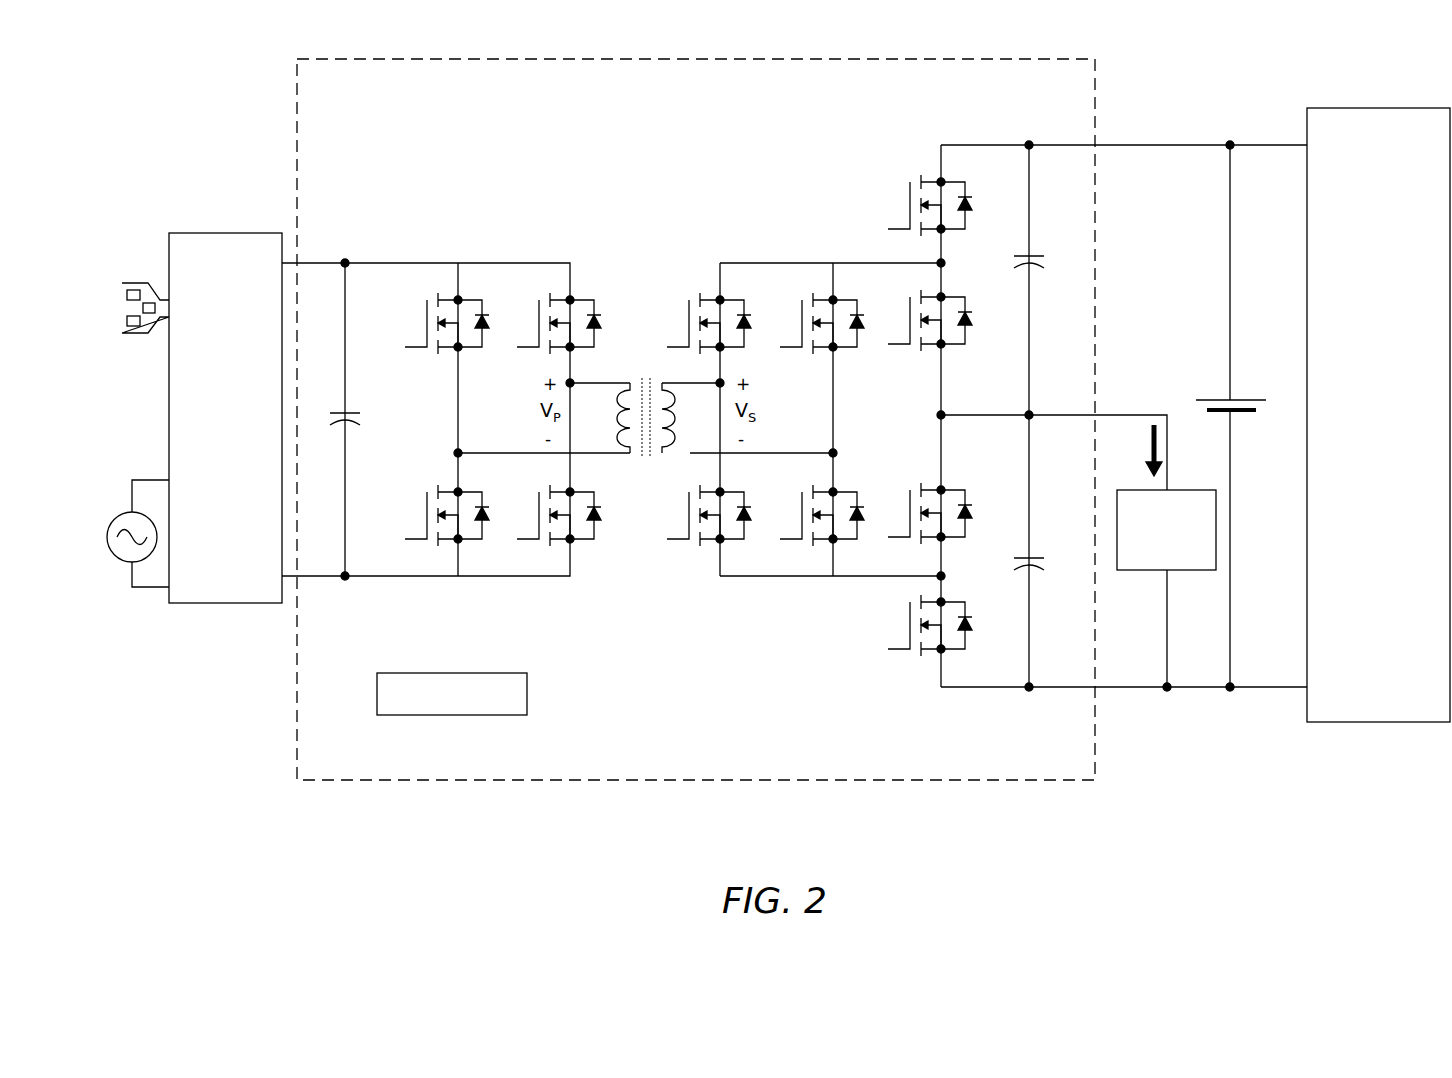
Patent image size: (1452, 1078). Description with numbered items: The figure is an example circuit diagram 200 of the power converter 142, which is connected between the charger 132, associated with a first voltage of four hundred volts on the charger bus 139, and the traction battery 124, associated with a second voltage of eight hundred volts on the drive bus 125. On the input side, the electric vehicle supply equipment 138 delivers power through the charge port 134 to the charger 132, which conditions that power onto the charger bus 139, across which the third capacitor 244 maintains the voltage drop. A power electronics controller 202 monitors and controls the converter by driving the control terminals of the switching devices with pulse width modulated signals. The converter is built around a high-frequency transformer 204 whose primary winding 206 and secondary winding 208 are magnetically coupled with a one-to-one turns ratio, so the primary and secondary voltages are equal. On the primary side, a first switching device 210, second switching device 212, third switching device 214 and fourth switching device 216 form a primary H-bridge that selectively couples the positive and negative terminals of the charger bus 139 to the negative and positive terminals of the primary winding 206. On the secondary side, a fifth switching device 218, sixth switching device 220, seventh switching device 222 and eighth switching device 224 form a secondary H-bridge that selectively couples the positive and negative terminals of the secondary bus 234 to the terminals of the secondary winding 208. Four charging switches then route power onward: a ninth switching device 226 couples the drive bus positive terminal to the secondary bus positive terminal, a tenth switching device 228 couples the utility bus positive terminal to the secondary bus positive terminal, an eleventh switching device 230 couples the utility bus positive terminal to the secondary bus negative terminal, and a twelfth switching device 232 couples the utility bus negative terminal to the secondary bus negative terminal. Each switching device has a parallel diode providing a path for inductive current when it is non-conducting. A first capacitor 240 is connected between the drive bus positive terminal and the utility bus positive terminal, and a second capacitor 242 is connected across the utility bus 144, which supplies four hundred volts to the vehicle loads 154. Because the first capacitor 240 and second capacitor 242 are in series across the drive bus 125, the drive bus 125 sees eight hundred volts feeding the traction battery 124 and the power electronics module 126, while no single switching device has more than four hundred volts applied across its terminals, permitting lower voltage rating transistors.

The traction battery 124 is at (1250, 385).
The high-voltage drive bus 125 is at (1130, 144).
The power electronics module 126 is at (1378, 415).
The charger 132 is at (257, 418).
The charge port 134 is at (137, 283).
The electric vehicle supply equipment 138 is at (118, 515).
The high-voltage charger bus 139 is at (458, 270).
The power converter 142 is at (696, 419).
The utility bus 144 is at (1140, 412).
The vehicle loads 154 is at (1180, 572).
The circuit diagram 200 is at (770, 830).
The power electronics controller 202 is at (530, 684).
The high-frequency transformer 204 is at (646, 438).
The primary winding 206 is at (624, 460).
The secondary winding 208 is at (660, 460).
The first switching device 210 is at (442, 352).
The second switching device 212 is at (432, 500).
The third switching device 214 is at (526, 352).
The fourth switching device 216 is at (540, 490).
The fifth switching device 218 is at (689, 298).
The sixth switching device 220 is at (686, 545).
The seventh switching device 222 is at (842, 350).
The eighth switching device 224 is at (845, 490).
The ninth switching device 226 is at (914, 168).
The tenth switching device 228 is at (952, 352).
The eleventh switching device 230 is at (953, 486).
The twelfth switching device 232 is at (968, 638).
The secondary bus 234 is at (848, 262).
The first capacitor 240 is at (1043, 243).
The second capacitor 242 is at (1045, 600).
The third capacitor 244 is at (345, 430).